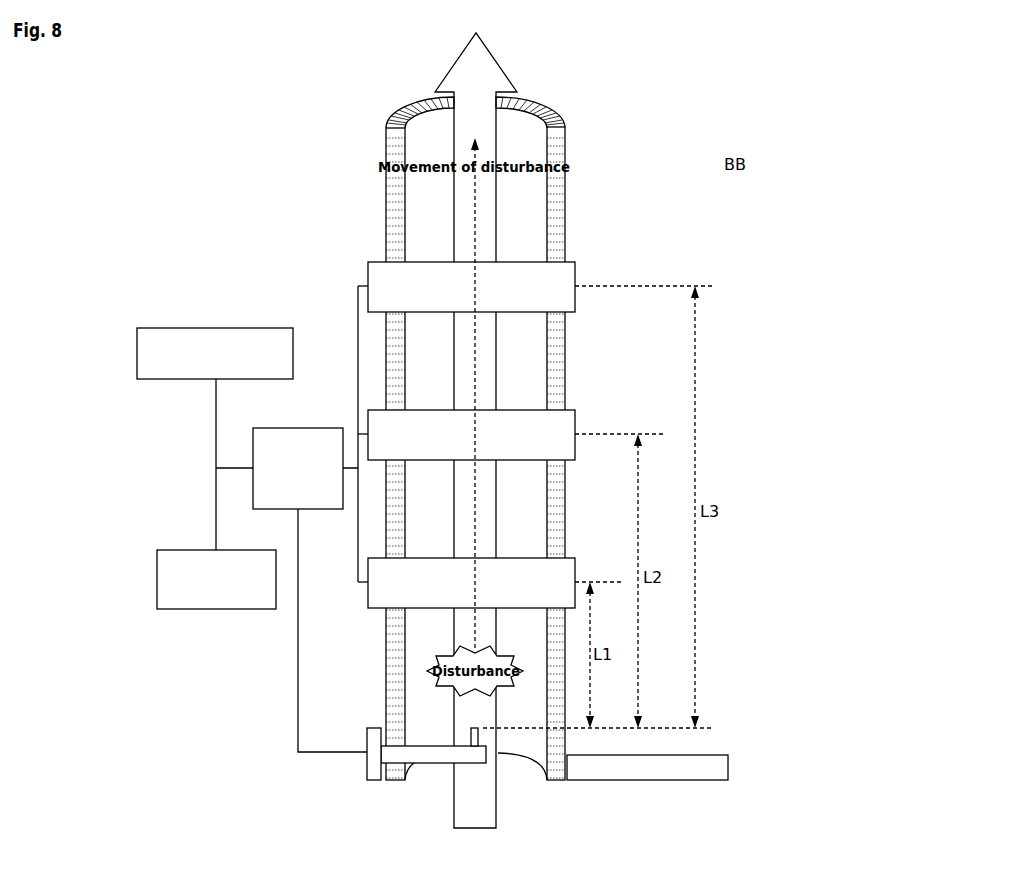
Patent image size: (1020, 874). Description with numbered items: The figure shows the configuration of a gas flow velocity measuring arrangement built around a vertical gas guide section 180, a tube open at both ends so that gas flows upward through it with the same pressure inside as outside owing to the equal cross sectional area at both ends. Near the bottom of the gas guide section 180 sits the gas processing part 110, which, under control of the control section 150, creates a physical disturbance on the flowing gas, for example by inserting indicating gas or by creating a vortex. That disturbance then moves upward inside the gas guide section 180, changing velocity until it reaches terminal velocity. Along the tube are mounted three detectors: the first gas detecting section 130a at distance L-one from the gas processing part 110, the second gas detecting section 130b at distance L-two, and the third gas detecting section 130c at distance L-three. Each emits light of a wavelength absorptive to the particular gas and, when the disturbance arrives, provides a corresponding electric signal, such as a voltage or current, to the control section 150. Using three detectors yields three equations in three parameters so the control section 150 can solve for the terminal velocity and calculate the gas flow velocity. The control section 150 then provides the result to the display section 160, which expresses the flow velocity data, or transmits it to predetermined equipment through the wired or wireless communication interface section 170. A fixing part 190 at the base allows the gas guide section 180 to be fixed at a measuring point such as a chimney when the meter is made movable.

The gas guide section 180 is at (557, 120).
The third gas detecting section 130c is at (577, 261).
The second gas detecting section 130b is at (576, 410).
The first gas detecting section 130a is at (576, 558).
The control section 150 is at (300, 427).
The communication interface section 170 is at (176, 380).
The display section 160 is at (185, 612).
The gas processing part 110 is at (365, 766).
The fixing part 190 is at (645, 782).